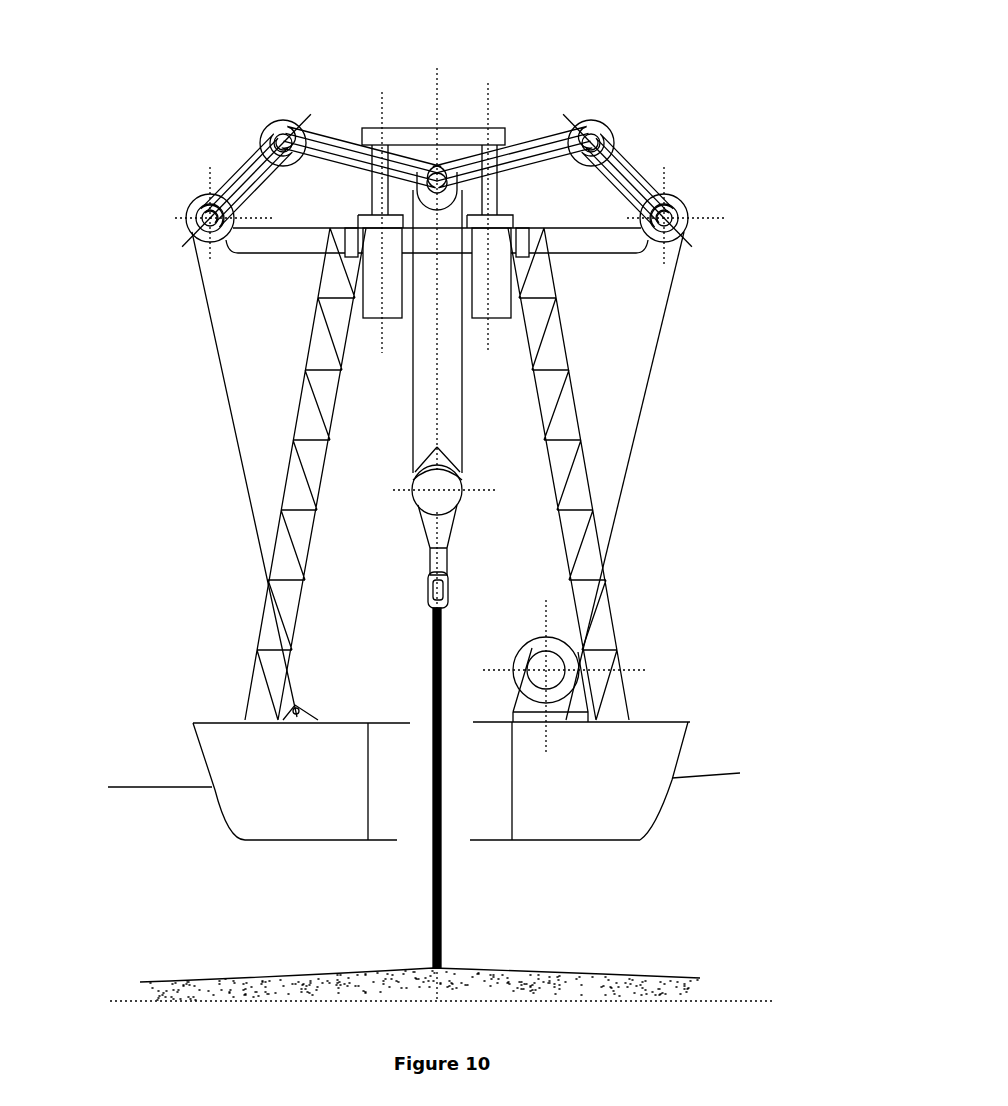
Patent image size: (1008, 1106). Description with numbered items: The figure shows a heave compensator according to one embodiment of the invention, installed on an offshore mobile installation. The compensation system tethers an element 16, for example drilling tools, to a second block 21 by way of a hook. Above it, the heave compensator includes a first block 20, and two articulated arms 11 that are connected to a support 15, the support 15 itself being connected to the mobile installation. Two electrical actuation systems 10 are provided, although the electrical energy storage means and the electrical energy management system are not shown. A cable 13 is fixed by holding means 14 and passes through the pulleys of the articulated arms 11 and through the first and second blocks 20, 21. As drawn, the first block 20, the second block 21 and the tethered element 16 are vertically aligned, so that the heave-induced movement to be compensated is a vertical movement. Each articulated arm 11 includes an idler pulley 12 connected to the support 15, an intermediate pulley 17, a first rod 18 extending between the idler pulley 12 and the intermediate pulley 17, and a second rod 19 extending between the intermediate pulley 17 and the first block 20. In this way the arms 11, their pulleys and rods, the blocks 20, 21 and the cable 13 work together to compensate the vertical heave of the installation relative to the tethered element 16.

The electrical actuation system 10 is at (370, 120).
The articulated arm 11 is at (238, 145).
The idler pulley 12 is at (692, 183).
The cable 13 is at (654, 408).
The holding means 14 is at (572, 655).
The support 15 is at (606, 768).
The element 16 is at (462, 618).
The intermediate pulley 17 is at (621, 117).
The first rod 18 is at (668, 165).
The second rod 19 is at (545, 126).
The first block 20 is at (355, 178).
The second block 21 is at (413, 477).